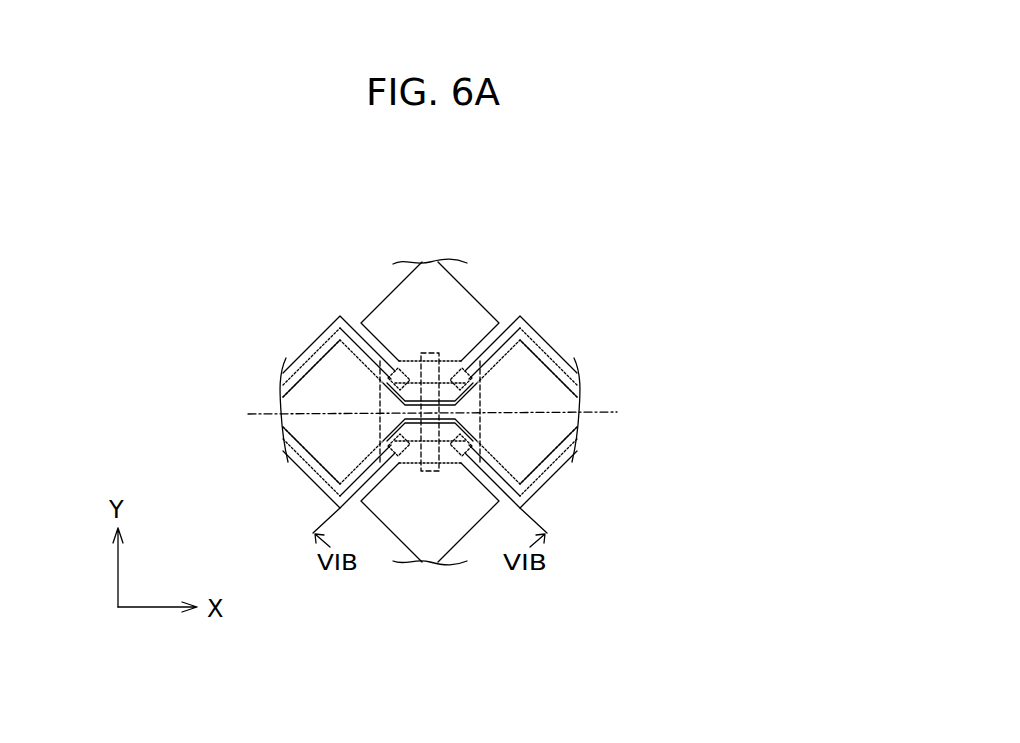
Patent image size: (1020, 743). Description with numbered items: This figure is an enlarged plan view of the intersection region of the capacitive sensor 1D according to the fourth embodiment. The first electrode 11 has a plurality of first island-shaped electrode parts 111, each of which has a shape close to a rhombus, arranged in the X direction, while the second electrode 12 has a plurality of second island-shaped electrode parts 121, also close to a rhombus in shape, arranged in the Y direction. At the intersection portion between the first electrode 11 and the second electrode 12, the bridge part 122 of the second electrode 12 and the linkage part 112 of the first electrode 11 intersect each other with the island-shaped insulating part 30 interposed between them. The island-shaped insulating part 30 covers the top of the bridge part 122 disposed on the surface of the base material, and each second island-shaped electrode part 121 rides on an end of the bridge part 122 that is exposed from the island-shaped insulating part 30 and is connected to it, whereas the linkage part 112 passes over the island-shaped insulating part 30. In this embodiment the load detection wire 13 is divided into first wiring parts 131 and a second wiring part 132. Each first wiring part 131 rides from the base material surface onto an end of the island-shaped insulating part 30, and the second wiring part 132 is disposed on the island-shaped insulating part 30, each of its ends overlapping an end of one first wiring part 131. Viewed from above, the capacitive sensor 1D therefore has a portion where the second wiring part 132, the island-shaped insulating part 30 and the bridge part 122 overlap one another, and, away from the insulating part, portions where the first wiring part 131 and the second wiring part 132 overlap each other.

The capacitive sensor 1D is at (550, 208).
The first electrode 11 is at (460, 401).
The first island-shaped electrode part 111 is at (312, 383).
The linkage part 112 is at (538, 388).
The second electrode 12 is at (397, 411).
The second island-shaped electrode part 121 is at (452, 355).
The bridge part 122 is at (434, 352).
The load detection wire 13 is at (451, 420).
The first wiring part 131 is at (338, 312).
The second wiring part 132 is at (418, 388).
The island-shaped insulating part 30 is at (478, 322).